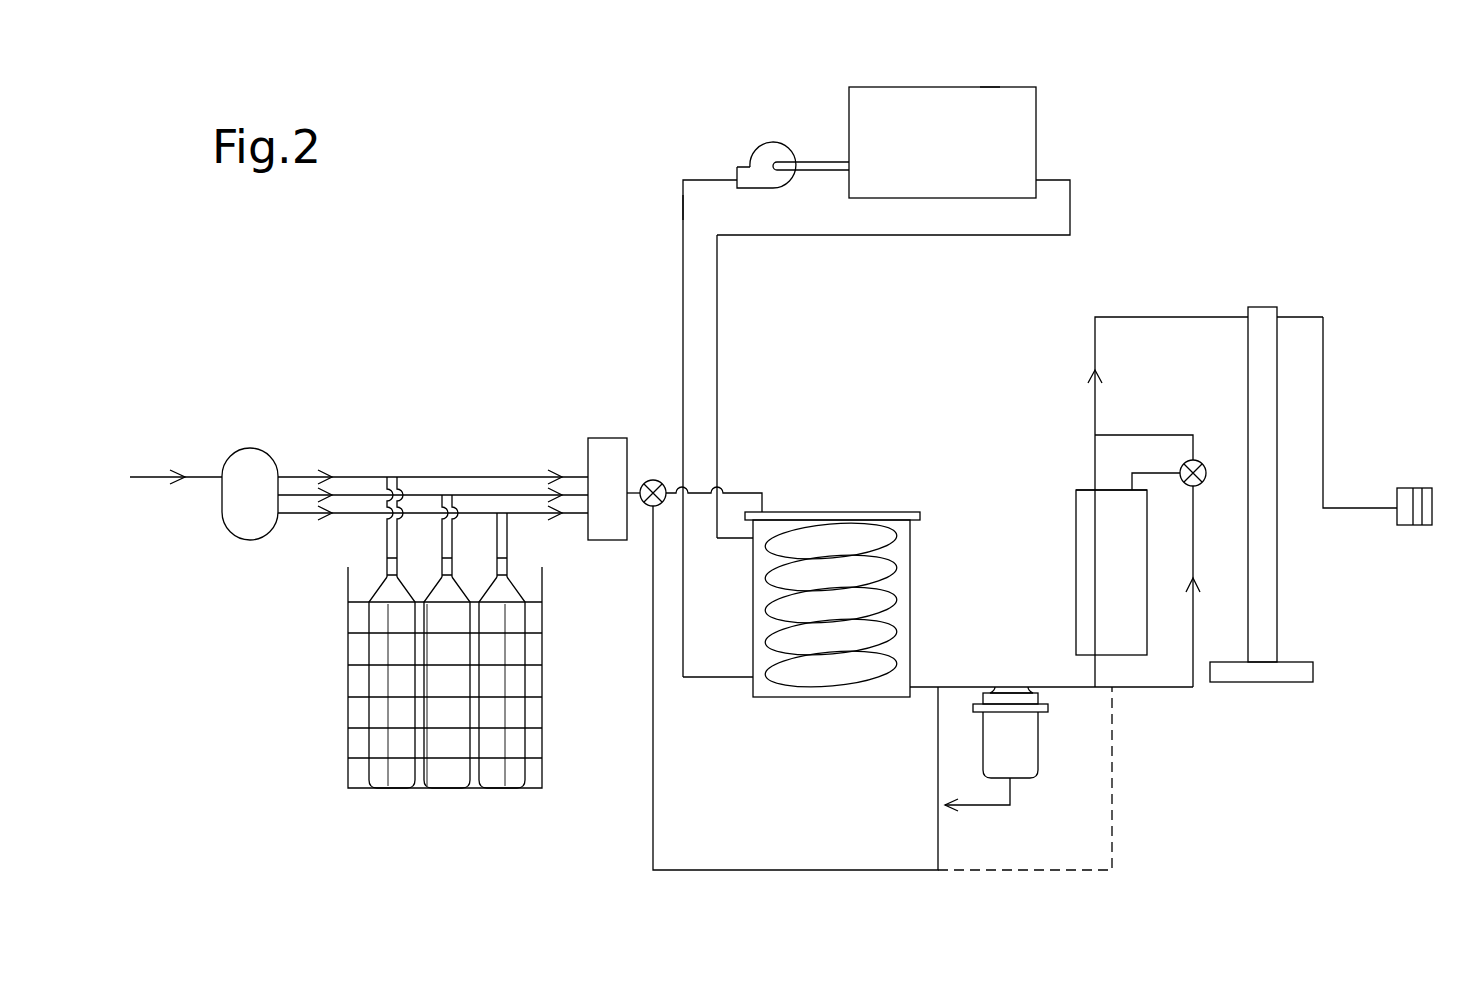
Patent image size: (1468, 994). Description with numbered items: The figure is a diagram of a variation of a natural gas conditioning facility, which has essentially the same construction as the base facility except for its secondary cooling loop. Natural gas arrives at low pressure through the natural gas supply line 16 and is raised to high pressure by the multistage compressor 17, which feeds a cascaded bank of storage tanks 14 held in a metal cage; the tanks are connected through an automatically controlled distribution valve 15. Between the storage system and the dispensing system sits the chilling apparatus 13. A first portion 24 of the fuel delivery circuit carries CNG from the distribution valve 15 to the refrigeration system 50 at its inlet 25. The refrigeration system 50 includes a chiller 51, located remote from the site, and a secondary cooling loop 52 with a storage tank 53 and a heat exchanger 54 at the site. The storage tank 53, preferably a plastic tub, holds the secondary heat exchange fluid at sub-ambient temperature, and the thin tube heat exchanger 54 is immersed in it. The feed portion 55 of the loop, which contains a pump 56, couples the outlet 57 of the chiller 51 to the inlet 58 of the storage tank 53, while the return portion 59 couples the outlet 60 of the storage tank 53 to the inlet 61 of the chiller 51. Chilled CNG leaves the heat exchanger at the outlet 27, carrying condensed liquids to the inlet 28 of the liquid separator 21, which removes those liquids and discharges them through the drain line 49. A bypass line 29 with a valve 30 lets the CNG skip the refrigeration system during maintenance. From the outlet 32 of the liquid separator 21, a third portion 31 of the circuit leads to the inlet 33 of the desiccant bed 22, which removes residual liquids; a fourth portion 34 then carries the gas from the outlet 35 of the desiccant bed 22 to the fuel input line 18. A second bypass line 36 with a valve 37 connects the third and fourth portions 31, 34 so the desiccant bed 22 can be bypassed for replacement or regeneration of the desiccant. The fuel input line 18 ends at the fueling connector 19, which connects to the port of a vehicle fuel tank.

The chilling apparatus 13 is at (892, 415).
The storage tanks 14 is at (393, 788).
The distribution valve 15 is at (598, 436).
The natural gas supply line 16 is at (155, 477).
The multistage compressor 17 is at (253, 449).
The fuel input line 18 is at (1323, 395).
The fueling connector 19 is at (1410, 488).
The liquid separator 21 is at (1037, 743).
The desiccant bed 22 is at (1076, 560).
The first portion of the fuel delivery circuit 24 is at (747, 493).
The inlet of the refrigeration system 25 is at (765, 513).
The outlet of the refrigeration system heat exchanger 27 is at (910, 687).
The inlet of the liquid separator 28 is at (997, 688).
The bypass line 29 is at (840, 870).
The valve 30 is at (653, 506).
The third portion of the fuel delivery circuit 31 is at (1127, 687).
The outlet of the liquid separator 32 is at (1022, 688).
The inlet of the desiccant bed 33 is at (1130, 489).
The fourth portion of the fuel delivery circuit 34 is at (1095, 343).
The outlet of the desiccant bed 35 is at (1087, 490).
The second bypass line 36 is at (1120, 435).
The valve 37 is at (1200, 462).
The drain line 49 is at (997, 807).
The refrigeration system 50 is at (920, 86).
The chiller 51 is at (984, 86).
The secondary cooling loop 52 is at (683, 207).
The storage tank 53 is at (880, 512).
The heat exchanger 54 is at (895, 567).
The feed portion 55 is at (683, 286).
The pump 56 is at (770, 142).
The outlet of the chiller 57 is at (848, 160).
The inlet of the storage tank 58 is at (753, 677).
The return portion 59 is at (793, 235).
The outlet of the storage tank 60 is at (752, 540).
The inlet of the chiller 61 is at (1036, 178).